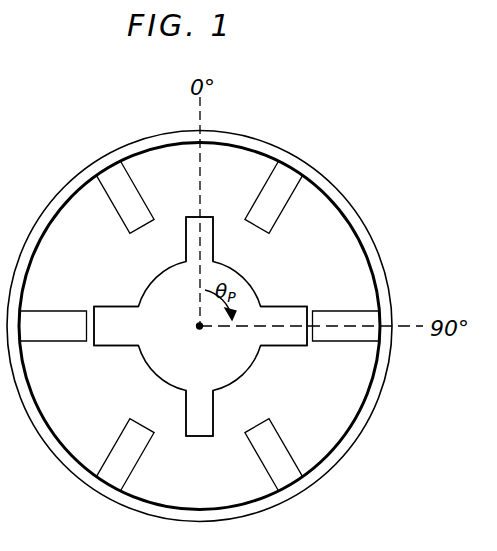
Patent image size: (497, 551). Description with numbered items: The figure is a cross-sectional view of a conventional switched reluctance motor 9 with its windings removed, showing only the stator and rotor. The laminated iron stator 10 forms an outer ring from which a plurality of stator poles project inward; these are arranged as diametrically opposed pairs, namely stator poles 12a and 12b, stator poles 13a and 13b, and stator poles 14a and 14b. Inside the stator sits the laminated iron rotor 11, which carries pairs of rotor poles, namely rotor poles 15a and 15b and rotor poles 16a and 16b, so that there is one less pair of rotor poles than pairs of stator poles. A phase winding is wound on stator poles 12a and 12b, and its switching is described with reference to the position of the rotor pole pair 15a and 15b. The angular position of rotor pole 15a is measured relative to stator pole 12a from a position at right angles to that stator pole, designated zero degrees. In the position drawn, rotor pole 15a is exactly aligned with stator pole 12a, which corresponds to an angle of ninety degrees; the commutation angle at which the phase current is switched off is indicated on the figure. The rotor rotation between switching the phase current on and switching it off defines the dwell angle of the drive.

The motor 9 is at (320, 424).
The laminated iron stator 10 is at (263, 143).
The laminated iron rotor 11 is at (178, 319).
The stator pole 12a is at (346, 343).
The stator pole 12b is at (52, 311).
The stator pole 13a is at (271, 230).
The stator pole 13b is at (113, 444).
The stator pole 14a is at (160, 178).
The stator pole 14b is at (262, 478).
The rotor pole 15a is at (286, 306).
The rotor pole 15b is at (113, 306).
The rotor pole 16a is at (185, 228).
The rotor pole 16b is at (185, 412).